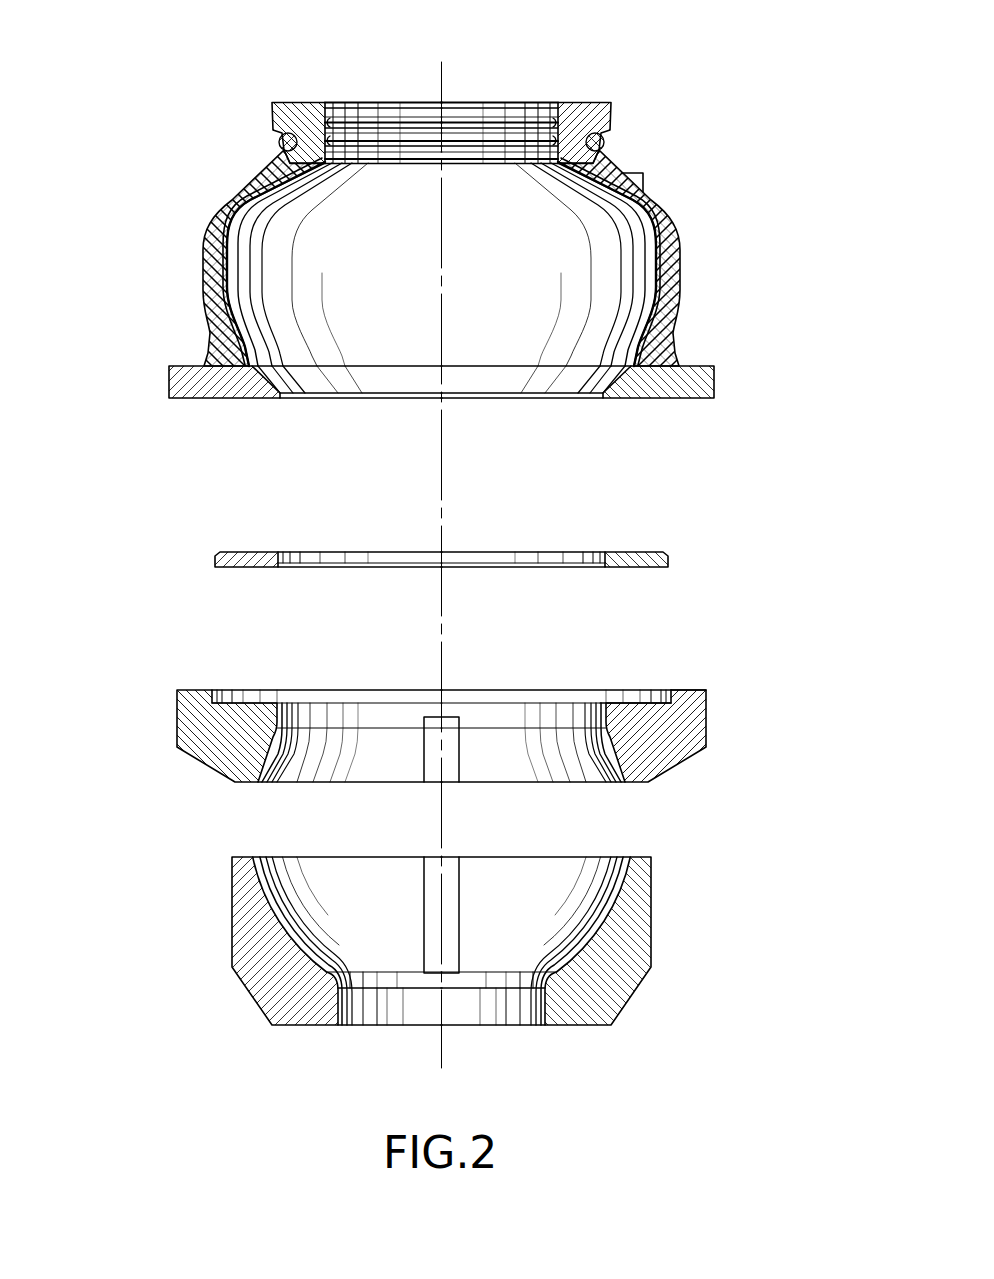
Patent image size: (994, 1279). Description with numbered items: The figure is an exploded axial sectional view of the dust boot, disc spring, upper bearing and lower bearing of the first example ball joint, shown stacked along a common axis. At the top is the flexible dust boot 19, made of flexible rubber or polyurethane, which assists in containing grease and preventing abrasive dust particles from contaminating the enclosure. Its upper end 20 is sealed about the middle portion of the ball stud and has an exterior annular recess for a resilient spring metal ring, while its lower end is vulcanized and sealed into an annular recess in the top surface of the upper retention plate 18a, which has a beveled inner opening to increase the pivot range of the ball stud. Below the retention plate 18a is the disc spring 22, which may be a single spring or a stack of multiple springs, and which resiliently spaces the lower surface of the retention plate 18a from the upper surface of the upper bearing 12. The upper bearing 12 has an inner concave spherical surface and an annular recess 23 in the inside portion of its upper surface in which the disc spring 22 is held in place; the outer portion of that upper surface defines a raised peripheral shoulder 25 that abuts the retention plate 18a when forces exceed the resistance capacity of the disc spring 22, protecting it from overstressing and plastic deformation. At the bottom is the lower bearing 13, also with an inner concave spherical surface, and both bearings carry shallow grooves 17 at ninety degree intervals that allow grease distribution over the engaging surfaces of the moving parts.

The upper bearing 12 is at (177, 710).
The housing 13 is at (246, 1000).
The shallow grooves 17 is at (613, 753).
The upper retention plate 18a is at (717, 382).
The flexible dust boot 19 is at (675, 246).
The upper end 20 is at (563, 102).
The disc spring 22 is at (668, 558).
The annular recess 23 is at (647, 690).
The raised peripheral shoulder 25 is at (690, 690).